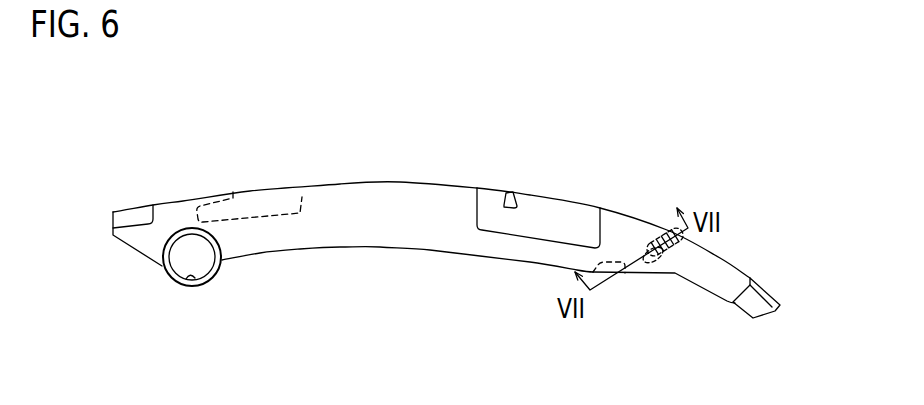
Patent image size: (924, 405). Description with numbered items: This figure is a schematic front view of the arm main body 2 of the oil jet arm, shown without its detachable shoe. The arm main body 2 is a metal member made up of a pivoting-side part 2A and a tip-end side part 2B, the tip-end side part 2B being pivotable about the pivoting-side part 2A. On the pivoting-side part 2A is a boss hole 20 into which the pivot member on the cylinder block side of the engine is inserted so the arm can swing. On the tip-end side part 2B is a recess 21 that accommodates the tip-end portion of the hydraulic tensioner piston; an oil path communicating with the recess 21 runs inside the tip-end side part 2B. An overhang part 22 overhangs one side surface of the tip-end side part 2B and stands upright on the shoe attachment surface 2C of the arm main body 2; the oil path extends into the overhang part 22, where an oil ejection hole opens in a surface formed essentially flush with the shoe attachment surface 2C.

The arm main body 2 is at (393, 147).
The pivoting-side part 2A is at (142, 245).
The tip-end side part 2B is at (713, 290).
The shoe attachment surface 2C is at (617, 212).
The boss hole 20 is at (190, 276).
The recess 21 is at (640, 273).
The overhang part 22 is at (682, 248).